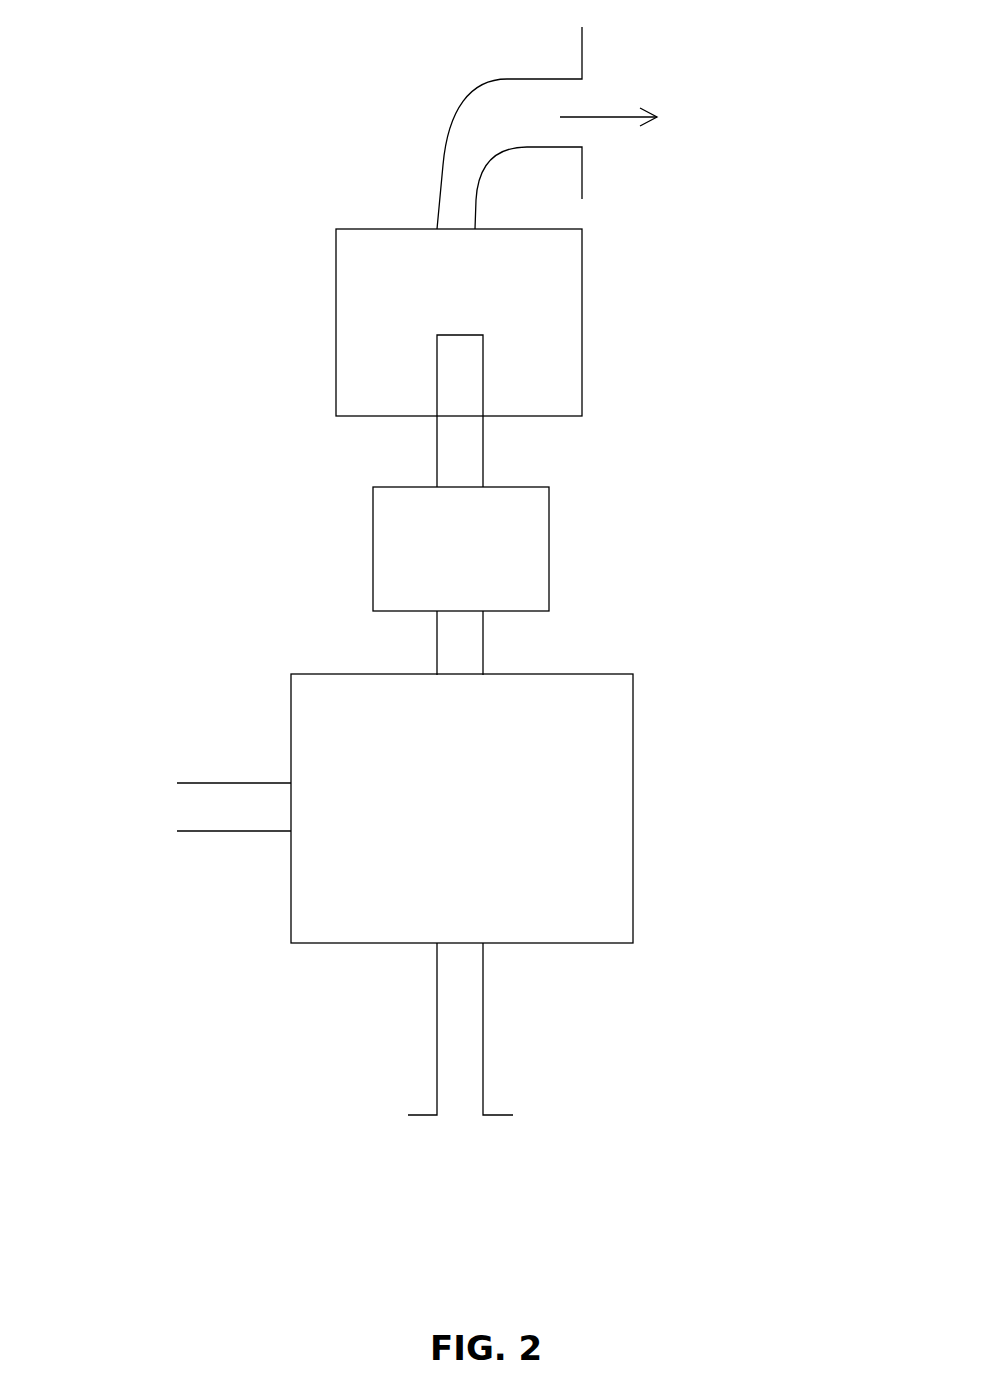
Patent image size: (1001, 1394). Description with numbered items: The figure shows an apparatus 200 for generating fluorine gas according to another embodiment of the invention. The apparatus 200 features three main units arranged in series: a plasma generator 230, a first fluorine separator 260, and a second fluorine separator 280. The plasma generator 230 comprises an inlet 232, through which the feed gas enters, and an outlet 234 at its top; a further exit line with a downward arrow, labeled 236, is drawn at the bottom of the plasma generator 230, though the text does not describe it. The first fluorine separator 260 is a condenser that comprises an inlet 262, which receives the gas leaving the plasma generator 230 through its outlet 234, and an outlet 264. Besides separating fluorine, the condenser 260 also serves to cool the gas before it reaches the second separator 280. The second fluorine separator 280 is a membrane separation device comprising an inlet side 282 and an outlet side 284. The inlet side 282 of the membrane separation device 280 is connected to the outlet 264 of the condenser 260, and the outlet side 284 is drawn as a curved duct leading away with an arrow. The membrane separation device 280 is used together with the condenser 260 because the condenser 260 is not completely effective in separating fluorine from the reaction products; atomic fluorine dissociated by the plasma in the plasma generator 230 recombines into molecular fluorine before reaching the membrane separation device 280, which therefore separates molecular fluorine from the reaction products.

The apparatus for generating fluorine gas 200 is at (138, 83).
The plasma generator 230 is at (504, 808).
The inlet 232 is at (210, 807).
The outlet 234 is at (522, 654).
The bottoms outlet 236 is at (462, 1083).
The first fluorine separator 260 is at (503, 549).
The inlet 262 is at (410, 643).
The outlet 264 is at (387, 468).
The second fluorine separator 280 is at (500, 322).
The inlet side 282 is at (423, 383).
The outlet side 284 is at (502, 128).